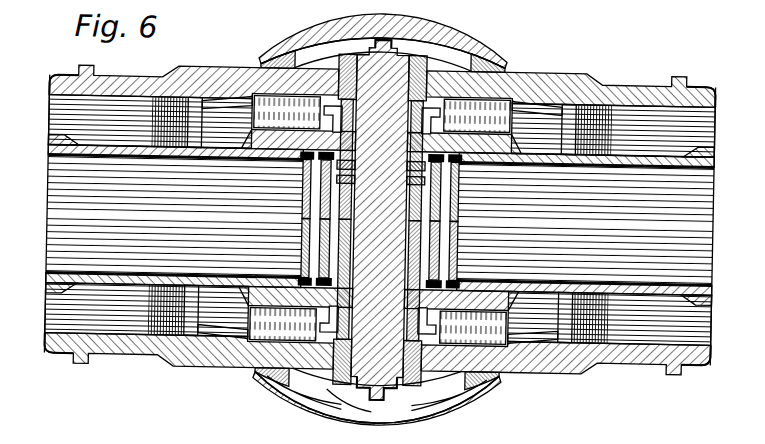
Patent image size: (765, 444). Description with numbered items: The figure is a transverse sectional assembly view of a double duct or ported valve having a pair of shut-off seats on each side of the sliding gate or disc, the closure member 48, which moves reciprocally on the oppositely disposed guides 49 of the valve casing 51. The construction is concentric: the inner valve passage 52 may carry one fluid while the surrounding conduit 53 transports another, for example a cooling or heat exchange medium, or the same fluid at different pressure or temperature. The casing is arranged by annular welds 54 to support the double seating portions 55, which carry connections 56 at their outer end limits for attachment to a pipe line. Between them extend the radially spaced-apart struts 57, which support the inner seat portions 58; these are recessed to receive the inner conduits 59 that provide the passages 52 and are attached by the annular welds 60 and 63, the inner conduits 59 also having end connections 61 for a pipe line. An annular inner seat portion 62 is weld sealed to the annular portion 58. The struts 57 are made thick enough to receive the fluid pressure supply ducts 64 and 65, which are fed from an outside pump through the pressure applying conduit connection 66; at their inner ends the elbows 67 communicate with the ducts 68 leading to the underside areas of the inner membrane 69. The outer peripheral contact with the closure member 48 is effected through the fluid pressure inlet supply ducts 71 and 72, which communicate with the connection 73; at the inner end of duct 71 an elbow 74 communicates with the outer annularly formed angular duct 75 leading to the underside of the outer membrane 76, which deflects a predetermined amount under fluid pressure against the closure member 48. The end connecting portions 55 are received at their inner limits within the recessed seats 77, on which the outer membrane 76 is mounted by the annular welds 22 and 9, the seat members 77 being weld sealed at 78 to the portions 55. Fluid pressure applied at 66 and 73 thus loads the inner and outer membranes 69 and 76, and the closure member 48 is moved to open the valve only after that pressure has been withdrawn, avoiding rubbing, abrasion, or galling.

The annular weld 9 is at (352, 96).
The annular weld 22 is at (354, 72).
The closure member 48 is at (372, 44).
The guides 49 is at (392, 34).
The valve casing 51 is at (452, 406).
The inner valve passage 52 is at (145, 290).
The conduit 53 is at (85, 112).
The annular welds 54 is at (259, 62).
The double seating portions 55 is at (181, 68).
The connections 56 is at (47, 91).
The struts 57 is at (246, 118).
The inner seat portions 58 is at (515, 132).
The inner conduits 59 is at (215, 282).
The annular weld 60 is at (302, 280).
The end connections 61 is at (47, 146).
The inner seat portion 62 is at (300, 175).
The annular weld 63 is at (330, 270).
The fluid pressure supply duct 64 is at (244, 140).
The fluid pressure supply duct 65 is at (246, 103).
The pressure applying conduit connection 66 is at (248, 96).
The elbows 67 is at (345, 113).
The ducts 68 is at (352, 181).
The inner membrane 69 is at (352, 166).
The fluid pressure inlet supply duct 71 is at (248, 322).
The fluid pressure inlet supply duct 72 is at (215, 372).
The connection 73 is at (244, 374).
The elbow 74 is at (345, 317).
The outer annularly formed angular duct 75 is at (310, 398).
The outer membrane 76 is at (342, 400).
The recessed seats 77 is at (310, 46).
The weld seal 78 is at (272, 58).